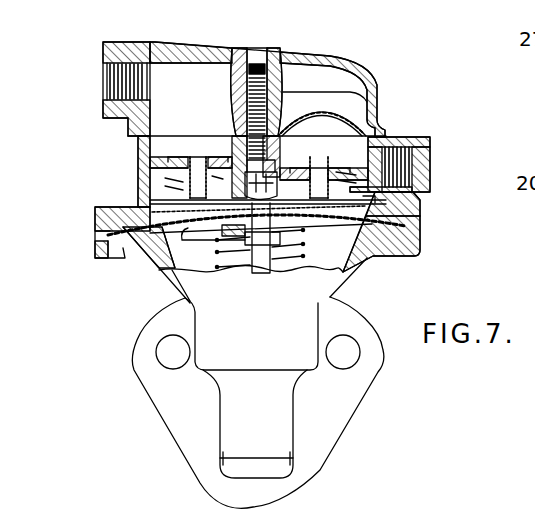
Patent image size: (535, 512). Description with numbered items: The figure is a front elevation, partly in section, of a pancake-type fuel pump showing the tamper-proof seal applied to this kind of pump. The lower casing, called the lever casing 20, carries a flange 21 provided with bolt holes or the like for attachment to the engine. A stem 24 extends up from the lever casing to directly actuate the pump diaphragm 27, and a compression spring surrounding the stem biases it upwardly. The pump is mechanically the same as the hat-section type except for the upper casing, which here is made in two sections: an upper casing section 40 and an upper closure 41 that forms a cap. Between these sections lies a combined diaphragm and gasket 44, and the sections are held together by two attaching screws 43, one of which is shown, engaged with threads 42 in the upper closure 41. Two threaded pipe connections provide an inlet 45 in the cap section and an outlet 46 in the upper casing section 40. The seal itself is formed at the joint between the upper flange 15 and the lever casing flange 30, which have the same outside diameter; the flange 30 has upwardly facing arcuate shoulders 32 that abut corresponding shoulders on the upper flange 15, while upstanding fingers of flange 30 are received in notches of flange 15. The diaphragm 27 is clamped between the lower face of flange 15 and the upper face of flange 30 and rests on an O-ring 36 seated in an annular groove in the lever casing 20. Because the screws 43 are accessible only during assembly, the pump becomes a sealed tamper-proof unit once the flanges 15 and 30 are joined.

The upper flange 15 is at (114, 205).
The lever casing 20 is at (338, 286).
The flange 21 is at (358, 403).
The stem 24 is at (286, 272).
The diaphragm 27 is at (420, 213).
The flange 30 is at (418, 246).
The arcuate shoulders 32 is at (420, 221).
The O-ring 36 is at (113, 256).
The upper casing section 40 is at (140, 154).
The upper closure 41 is at (358, 66).
The threads 42 is at (244, 106).
The attaching screws 43 is at (284, 137).
The combined diaphragm and gasket 44 is at (350, 125).
The inlet 45 is at (107, 78).
The outlet 46 is at (418, 166).